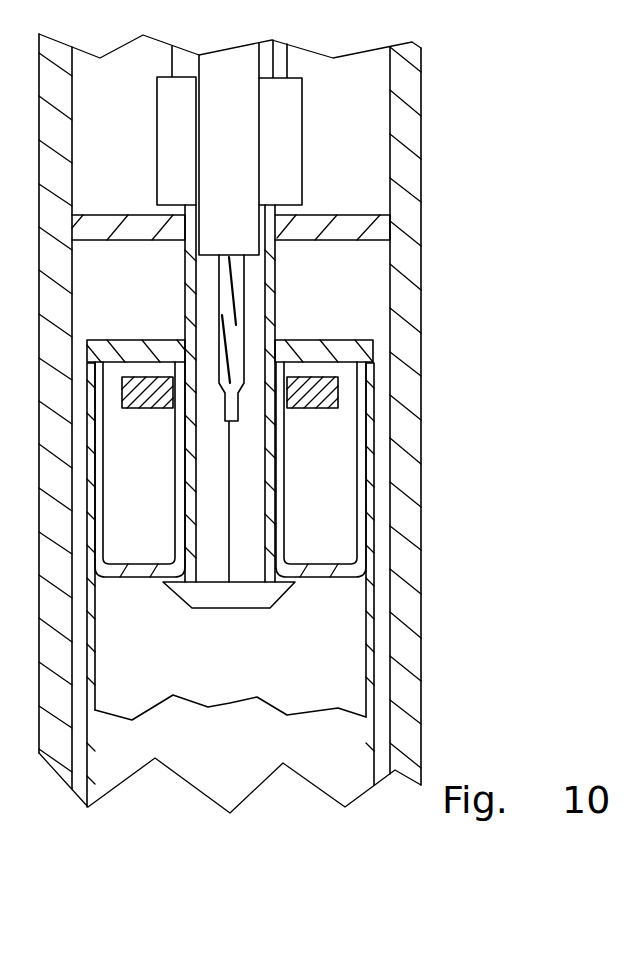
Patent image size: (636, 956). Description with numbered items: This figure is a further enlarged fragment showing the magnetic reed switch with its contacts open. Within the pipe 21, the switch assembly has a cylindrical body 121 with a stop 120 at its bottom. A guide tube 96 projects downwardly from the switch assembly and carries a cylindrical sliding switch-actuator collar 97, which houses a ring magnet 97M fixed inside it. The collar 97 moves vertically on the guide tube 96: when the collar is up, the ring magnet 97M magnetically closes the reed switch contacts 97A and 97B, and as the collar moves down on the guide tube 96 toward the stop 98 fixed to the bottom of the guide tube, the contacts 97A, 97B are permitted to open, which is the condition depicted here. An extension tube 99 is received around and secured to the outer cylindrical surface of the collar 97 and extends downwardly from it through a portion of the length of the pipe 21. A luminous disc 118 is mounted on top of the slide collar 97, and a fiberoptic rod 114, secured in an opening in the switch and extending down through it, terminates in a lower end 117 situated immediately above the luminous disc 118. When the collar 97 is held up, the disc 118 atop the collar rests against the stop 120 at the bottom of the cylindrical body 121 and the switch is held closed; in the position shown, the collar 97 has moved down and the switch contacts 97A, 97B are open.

The pipe 21 is at (412, 462).
The fiberoptic rod 114 is at (233, 158).
The cylindrical body 121 is at (273, 62).
The stop 120 is at (378, 237).
The lower end 117 is at (257, 258).
The reed switch contact 97A is at (237, 272).
The reed switch contact 97B is at (223, 330).
The guide tube 96 is at (248, 530).
The luminous disc 118 is at (357, 352).
The switch-actuator collar 97 is at (323, 475).
The ring magnet 97M is at (338, 392).
The stop 98 is at (253, 595).
The extension tube 99 is at (352, 753).